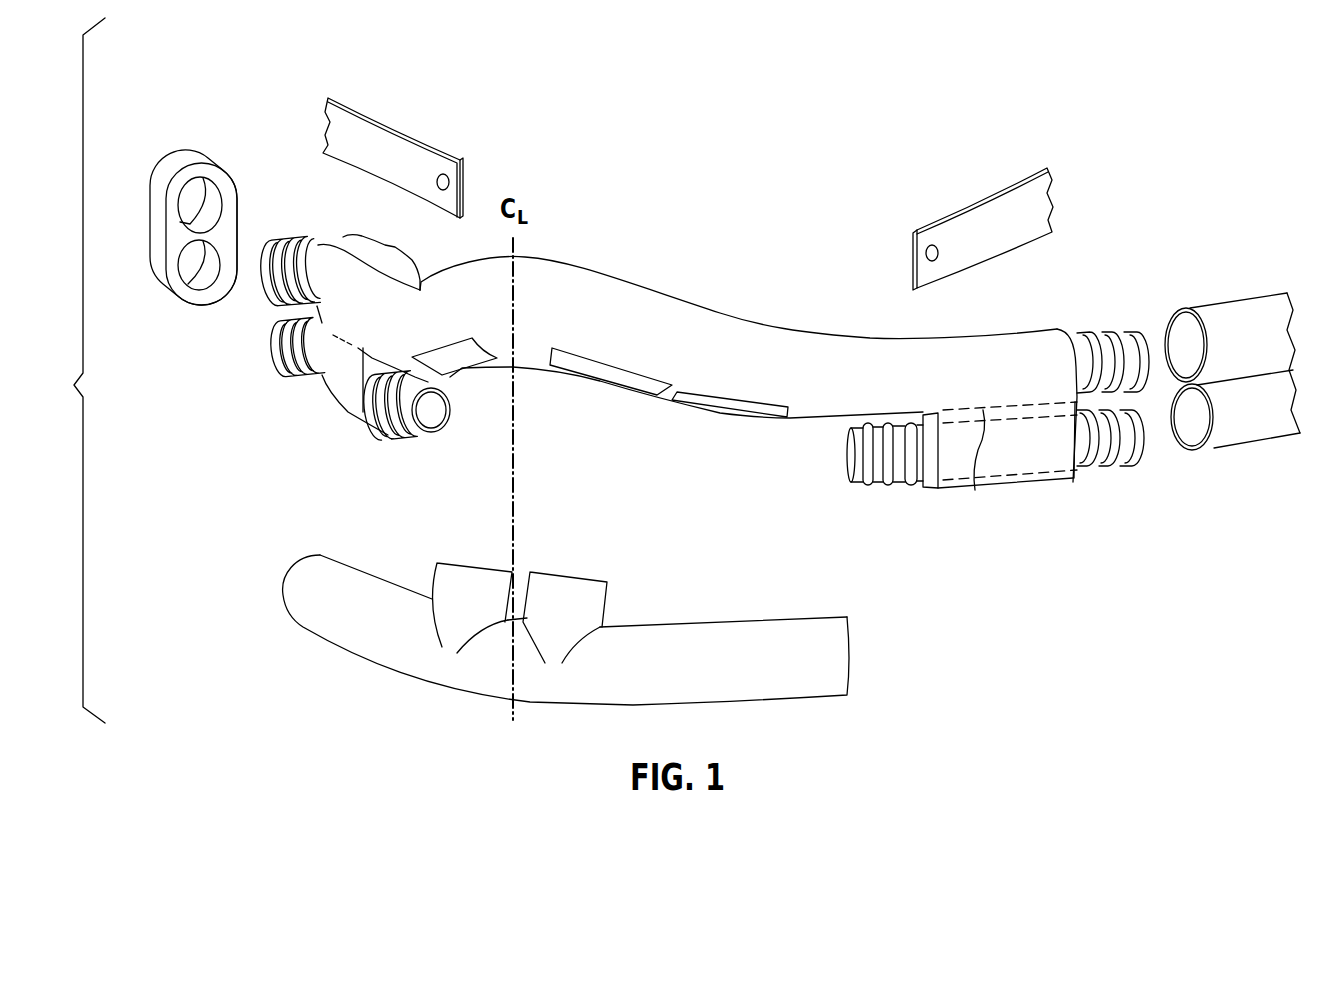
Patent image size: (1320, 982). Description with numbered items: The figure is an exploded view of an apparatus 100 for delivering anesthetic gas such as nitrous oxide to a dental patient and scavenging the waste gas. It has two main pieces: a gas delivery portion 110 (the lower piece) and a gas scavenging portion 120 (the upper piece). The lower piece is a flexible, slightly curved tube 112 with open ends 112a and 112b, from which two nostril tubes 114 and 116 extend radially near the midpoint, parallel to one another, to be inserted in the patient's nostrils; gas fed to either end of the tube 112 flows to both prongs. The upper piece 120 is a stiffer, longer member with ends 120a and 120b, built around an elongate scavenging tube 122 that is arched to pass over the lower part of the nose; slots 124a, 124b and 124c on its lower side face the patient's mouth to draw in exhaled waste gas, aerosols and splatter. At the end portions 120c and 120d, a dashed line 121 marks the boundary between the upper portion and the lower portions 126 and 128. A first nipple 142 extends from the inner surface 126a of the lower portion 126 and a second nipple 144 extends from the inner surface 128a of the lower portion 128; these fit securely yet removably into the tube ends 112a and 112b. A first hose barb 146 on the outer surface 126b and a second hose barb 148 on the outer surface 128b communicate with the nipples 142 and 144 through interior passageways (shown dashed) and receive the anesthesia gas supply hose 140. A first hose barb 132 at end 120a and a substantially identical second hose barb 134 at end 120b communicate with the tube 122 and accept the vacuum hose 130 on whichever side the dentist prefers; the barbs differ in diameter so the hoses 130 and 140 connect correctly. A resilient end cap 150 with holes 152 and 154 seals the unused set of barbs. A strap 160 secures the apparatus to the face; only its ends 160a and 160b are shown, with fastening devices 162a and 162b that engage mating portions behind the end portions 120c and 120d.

The apparatus 100 is at (757, 170).
The gas delivery portion 110 is at (546, 542).
The tube 112 is at (540, 703).
The end of tube 112a is at (853, 660).
The end of tube 112b is at (297, 560).
The nostril tube 114 is at (593, 580).
The nostril tube 116 is at (462, 562).
The gas scavenging portion 120 is at (697, 254).
The end of upper piece 120a is at (1066, 327).
The end of upper piece 120b is at (327, 245).
The end portion of upper piece 120c is at (1053, 332).
The end portion of upper piece 120d is at (404, 246).
The dashed line 121 is at (313, 375).
The tube 122 is at (739, 318).
The slot 124a is at (750, 413).
The slot 124b is at (588, 364).
The slot 124c is at (463, 357).
The lower portion 126 is at (1007, 448).
The inner surface of lower portion 126a is at (927, 488).
The outer surface of lower portion 126b is at (1068, 470).
The lower portion 128 is at (347, 400).
The inner surface of lower portion 128a is at (377, 423).
The outer surface of lower portion 128b is at (318, 382).
The vacuum hose 130 is at (1195, 307).
The first hose barb 132 is at (1113, 330).
The second hose barb 134 is at (285, 243).
The anesthesia gas supply hose 140 is at (1236, 450).
The first nipple 142 is at (857, 483).
The second nipple 144 is at (440, 433).
The first hose barb 146 is at (1110, 463).
The second hose barb 148 is at (280, 342).
The end cap 150 is at (158, 132).
The hole 152 is at (183, 222).
The hole 154 is at (190, 288).
The strap 160 is at (388, 82).
The end of strap 160a is at (910, 262).
The end of strap 160b is at (464, 180).
The fastening device 162a is at (934, 244).
The fastening device 162b is at (443, 174).